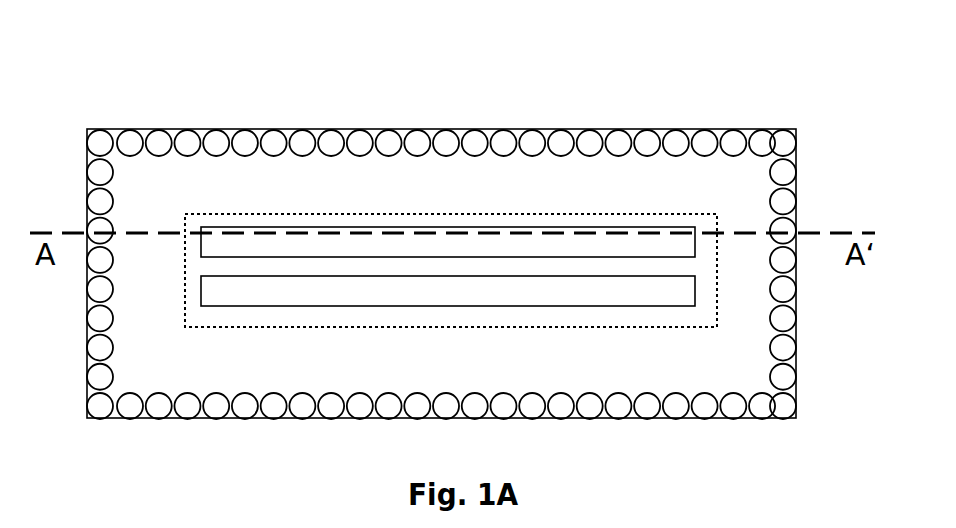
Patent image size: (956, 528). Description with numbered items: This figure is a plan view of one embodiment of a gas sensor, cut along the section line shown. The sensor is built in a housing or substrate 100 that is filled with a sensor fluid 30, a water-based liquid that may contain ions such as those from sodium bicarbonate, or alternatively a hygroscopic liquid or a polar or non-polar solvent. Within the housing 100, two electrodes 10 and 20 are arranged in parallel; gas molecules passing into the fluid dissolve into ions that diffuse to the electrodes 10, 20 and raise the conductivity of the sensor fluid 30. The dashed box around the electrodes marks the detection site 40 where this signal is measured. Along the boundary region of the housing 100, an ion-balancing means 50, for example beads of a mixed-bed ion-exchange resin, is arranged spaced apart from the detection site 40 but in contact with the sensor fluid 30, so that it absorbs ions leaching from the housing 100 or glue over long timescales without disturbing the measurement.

The housing or substrate 100 is at (485, 219).
The electrode 10 is at (235, 242).
The electrode 20 is at (380, 285).
The sensor fluid 30 is at (165, 185).
The detection site 40 is at (534, 173).
The ion-balancing means 50 is at (623, 142).